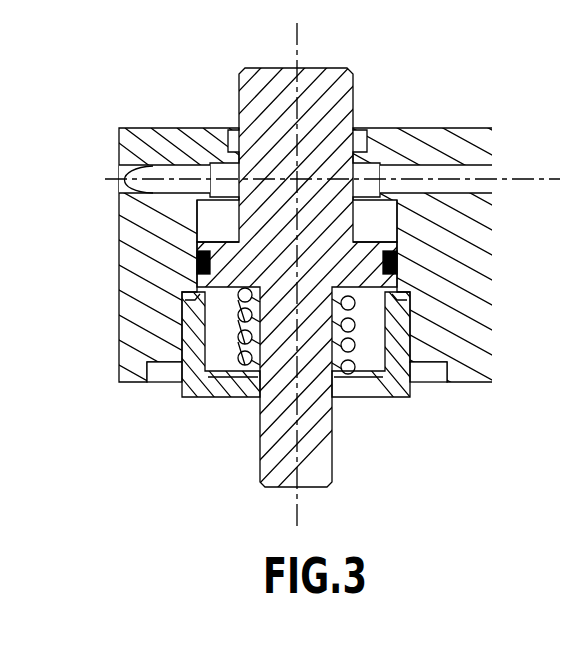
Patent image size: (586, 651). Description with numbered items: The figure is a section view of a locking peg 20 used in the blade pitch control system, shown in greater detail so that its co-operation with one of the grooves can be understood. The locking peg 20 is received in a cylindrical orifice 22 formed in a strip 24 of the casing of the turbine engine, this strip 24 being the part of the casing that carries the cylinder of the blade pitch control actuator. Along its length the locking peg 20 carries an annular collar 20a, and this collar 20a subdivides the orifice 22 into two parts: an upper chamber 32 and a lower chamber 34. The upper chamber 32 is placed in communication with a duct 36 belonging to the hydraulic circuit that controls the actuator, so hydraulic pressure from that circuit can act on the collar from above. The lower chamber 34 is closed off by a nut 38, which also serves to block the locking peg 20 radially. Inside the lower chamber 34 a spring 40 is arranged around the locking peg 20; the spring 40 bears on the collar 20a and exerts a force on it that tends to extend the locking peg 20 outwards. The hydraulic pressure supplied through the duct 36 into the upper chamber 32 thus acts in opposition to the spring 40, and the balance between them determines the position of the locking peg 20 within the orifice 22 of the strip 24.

The locking peg 20 is at (236, 111).
The annular collar 20a is at (197, 266).
The cylindrical orifice 22 is at (198, 230).
The strip 24 is at (433, 143).
The upper chamber 32 is at (372, 217).
The lower chamber 34 is at (368, 328).
The duct 36 is at (483, 170).
The nut 38 is at (350, 390).
The spring 40 is at (247, 358).